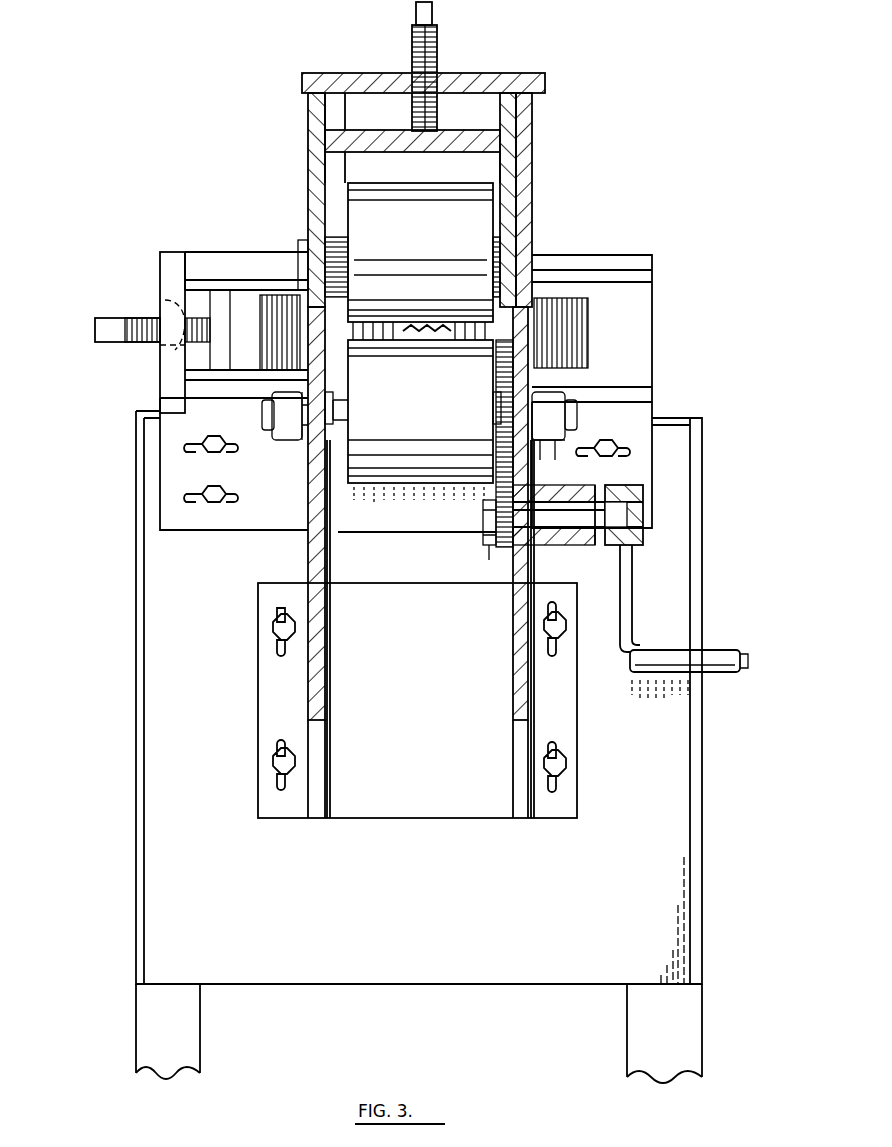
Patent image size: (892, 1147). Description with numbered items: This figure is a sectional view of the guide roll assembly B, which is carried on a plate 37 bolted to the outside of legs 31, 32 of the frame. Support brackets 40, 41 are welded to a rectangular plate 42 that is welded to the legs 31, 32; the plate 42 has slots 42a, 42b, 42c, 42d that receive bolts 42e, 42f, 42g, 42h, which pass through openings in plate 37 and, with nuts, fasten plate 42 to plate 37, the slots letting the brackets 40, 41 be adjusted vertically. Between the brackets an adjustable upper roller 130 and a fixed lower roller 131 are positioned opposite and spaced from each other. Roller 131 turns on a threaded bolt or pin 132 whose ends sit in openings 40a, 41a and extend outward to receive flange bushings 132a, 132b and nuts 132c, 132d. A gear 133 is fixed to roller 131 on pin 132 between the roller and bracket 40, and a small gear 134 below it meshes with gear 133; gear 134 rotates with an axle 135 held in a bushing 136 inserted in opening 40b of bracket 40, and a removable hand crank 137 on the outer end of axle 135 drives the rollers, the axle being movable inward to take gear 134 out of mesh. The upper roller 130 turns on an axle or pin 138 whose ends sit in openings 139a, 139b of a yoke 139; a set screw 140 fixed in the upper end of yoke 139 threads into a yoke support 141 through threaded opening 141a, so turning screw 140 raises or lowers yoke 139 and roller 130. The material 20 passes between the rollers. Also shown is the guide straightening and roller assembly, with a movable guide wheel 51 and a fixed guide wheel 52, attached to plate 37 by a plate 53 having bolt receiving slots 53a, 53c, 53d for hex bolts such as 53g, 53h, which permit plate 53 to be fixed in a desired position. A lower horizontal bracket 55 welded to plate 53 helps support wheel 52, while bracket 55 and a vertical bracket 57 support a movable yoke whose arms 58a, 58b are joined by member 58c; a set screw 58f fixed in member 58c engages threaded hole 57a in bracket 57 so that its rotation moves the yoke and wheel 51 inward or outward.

The dough sheet 20 is at (478, 331).
The leg 31 is at (680, 1030).
The leg 32 is at (184, 1030).
The plate 37 is at (438, 946).
The support bracket 40 is at (518, 820).
The opening 40a is at (495, 412).
The opening 40b is at (562, 486).
The support bracket 41 is at (314, 820).
The opening 41a is at (333, 412).
The rectangular plate 42 is at (578, 808).
The slot 42a is at (555, 650).
The slot 42b is at (555, 762).
The slot 42c is at (277, 610).
The slot 42d is at (280, 786).
The bolt 42e is at (555, 622).
The bolt 42f is at (560, 768).
The bolt 42g is at (273, 632).
The bolt 42h is at (273, 765).
The movable guide and straightening roller 51 is at (272, 295).
The fixed guide and straightening roller 52 is at (585, 332).
The plate 53 is at (374, 520).
The bolt receiving slot 53a is at (618, 452).
The bolt receiving slot 53c is at (186, 446).
The bolt receiving slot 53d is at (685, 442).
The hex bolt 53g is at (186, 446).
The hex bolt 53h is at (208, 502).
The lower horizontal bracket 55 is at (640, 394).
The vertical bracket 57 is at (168, 360).
The threaded hole 57a is at (170, 300).
The arm 58a is at (288, 312).
The arm 58b is at (246, 388).
The member 58c is at (218, 300).
The set screw 58f is at (96, 330).
The adjustable upper roller 130 is at (430, 192).
The fixed lower roller 131 is at (428, 453).
The threaded bolt or pin 132 is at (358, 412).
The flange bushing 132a is at (528, 450).
The flange bushing 132b is at (298, 435).
The nut 132c is at (565, 432).
The nut 132d is at (282, 430).
The gear 133 is at (475, 470).
The small gear 134 is at (500, 552).
The axle 135 is at (485, 520).
The bushing 136 is at (545, 548).
The hand crank 137 is at (620, 590).
The axle or pin 138 is at (318, 262).
The yoke 139 is at (515, 187).
The opening 139a is at (497, 250).
The opening 139b is at (338, 250).
The set screw 140 is at (437, 40).
The yoke support 141 is at (362, 74).
The threaded opening 141a is at (418, 74).
The guide roll assembly B is at (702, 330).